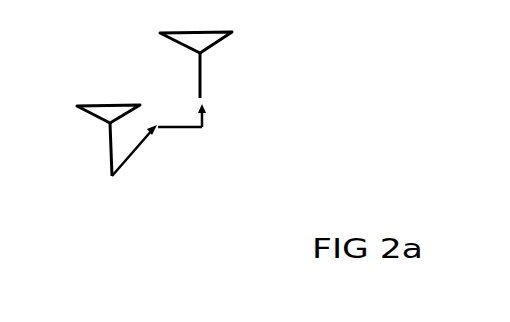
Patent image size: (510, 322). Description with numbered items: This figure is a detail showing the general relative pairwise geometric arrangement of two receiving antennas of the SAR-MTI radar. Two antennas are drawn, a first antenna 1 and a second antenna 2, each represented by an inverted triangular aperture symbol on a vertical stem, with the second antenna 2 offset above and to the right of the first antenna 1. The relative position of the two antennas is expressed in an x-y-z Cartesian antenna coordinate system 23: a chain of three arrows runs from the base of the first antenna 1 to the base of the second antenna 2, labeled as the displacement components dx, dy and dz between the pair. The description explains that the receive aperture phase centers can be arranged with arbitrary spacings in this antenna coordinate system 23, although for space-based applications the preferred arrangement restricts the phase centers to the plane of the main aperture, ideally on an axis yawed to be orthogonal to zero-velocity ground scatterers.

The first camera position 1 is at (112, 98).
The second camera position 2 is at (196, 55).
The x-y-z Cartesian antenna coordinate system 23 is at (300, 100).